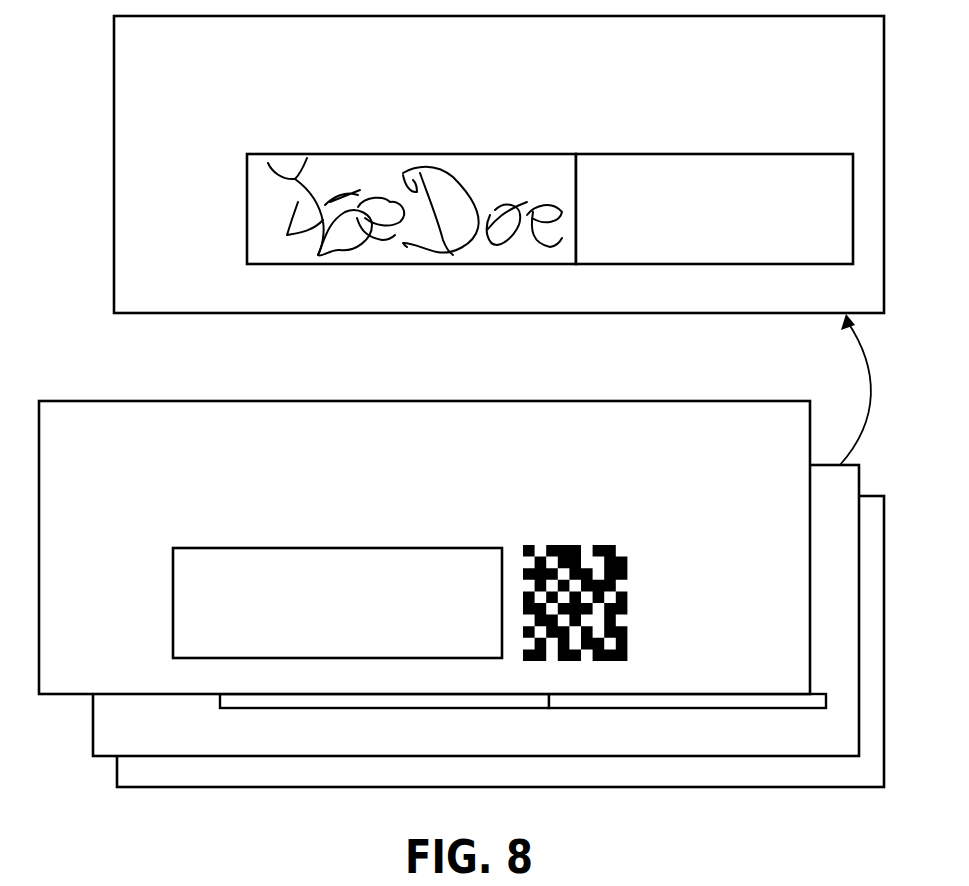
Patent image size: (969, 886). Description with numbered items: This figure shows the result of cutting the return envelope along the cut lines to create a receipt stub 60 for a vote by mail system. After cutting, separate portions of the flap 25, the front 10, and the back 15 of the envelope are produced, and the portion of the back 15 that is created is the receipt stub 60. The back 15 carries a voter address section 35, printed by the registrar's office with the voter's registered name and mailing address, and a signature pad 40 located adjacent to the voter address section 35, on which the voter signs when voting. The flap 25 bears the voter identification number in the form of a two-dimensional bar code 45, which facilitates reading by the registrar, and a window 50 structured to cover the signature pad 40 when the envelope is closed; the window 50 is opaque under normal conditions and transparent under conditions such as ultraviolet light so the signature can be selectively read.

The front 10 is at (823, 767).
The back 15 is at (258, 738).
The flap 25 is at (707, 676).
The voter address section 35 is at (615, 710).
The signature pad 40 is at (377, 710).
The two-dimensional bar code 45 is at (546, 545).
The window 50 is at (312, 549).
The receipt stub 60 is at (548, 313).